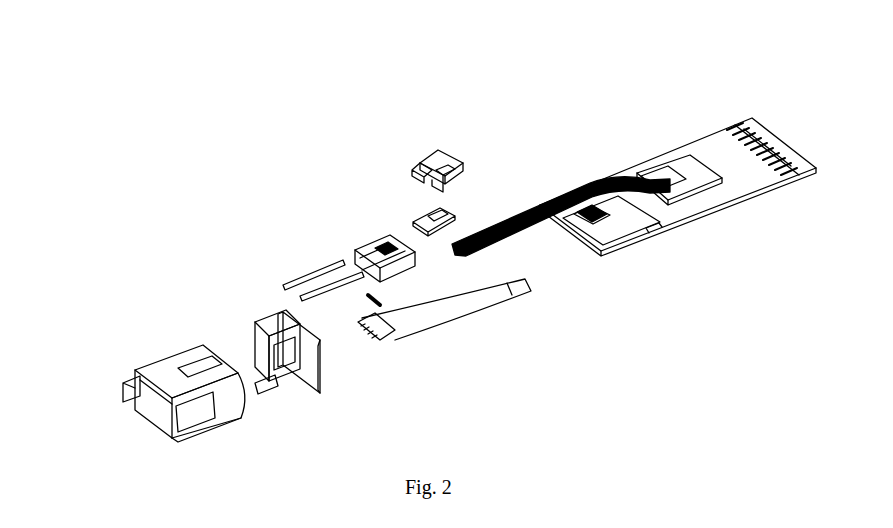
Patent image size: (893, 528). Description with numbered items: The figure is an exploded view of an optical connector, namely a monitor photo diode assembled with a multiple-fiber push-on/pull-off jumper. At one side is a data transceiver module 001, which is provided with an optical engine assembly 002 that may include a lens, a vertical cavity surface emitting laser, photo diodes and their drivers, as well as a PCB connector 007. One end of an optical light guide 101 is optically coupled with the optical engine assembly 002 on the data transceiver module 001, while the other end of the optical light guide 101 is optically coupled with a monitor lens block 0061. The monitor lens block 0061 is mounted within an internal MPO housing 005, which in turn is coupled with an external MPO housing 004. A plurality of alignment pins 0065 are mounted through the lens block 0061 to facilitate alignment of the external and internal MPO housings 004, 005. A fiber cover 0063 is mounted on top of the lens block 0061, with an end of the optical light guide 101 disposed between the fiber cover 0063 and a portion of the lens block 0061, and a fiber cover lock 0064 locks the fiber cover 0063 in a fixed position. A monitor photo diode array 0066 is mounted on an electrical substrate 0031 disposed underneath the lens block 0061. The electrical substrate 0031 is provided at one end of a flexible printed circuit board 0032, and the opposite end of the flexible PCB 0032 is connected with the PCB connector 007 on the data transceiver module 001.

The data transceiver module 001 is at (730, 107).
The optical engine assembly 002 is at (690, 203).
The external MPO housing 004 is at (117, 368).
The internal MPO housing 005 is at (248, 333).
The PCB connector 007 is at (592, 218).
The optical light guide 101 is at (600, 193).
The electrical substrate 0031 is at (390, 322).
The flexible printed circuit board 0032 is at (430, 313).
The monitor lens block 0061 is at (380, 243).
The fiber cover 0063 is at (433, 230).
The fiber cover lock 0064 is at (450, 157).
The alignment pins 0065 is at (330, 275).
The monitor photo diode array 0066 is at (367, 302).